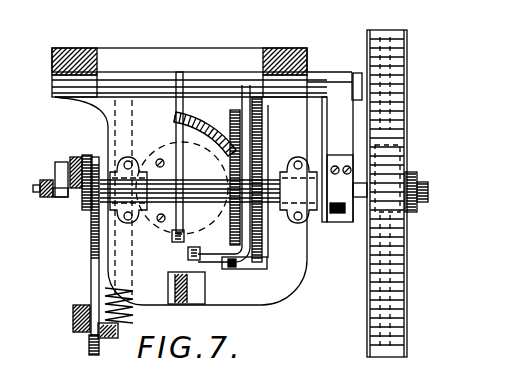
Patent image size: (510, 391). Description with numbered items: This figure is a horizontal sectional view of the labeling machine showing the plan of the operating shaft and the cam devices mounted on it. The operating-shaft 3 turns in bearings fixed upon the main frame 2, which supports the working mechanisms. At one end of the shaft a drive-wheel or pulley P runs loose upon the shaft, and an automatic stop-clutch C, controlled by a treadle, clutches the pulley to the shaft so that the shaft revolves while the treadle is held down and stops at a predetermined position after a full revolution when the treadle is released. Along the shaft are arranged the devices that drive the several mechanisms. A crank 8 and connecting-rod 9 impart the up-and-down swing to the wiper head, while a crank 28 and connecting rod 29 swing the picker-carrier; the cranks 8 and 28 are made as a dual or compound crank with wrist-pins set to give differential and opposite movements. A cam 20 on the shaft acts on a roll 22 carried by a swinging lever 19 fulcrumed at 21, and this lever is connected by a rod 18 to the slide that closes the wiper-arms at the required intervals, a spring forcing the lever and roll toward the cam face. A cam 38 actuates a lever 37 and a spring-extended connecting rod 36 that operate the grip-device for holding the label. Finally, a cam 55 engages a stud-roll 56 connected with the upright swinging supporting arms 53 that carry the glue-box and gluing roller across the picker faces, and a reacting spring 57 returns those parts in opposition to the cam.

The main frame 2 is at (207, 174).
The operating-shaft 3 is at (182, 188).
The crank 8 is at (60, 178).
The connecting-rod 9 is at (48, 200).
The rod 18 is at (166, 238).
The swinging lever 19 is at (176, 131).
The cam 20 is at (232, 268).
The fulcrum 21 is at (185, 88).
The roll 22 is at (205, 128).
The crank 28 is at (80, 194).
The connecting rod 29 is at (76, 156).
The connecting rod 36 is at (189, 256).
The lever 37 is at (243, 157).
The cam 38 is at (258, 227).
The supporting arms 53 is at (78, 323).
The cam 55 is at (90, 247).
The stud-roll 56 is at (93, 356).
The reacting spring 57 is at (133, 323).
The automatic stop-clutch C is at (347, 176).
The drive-wheel or pulley P is at (388, 152).